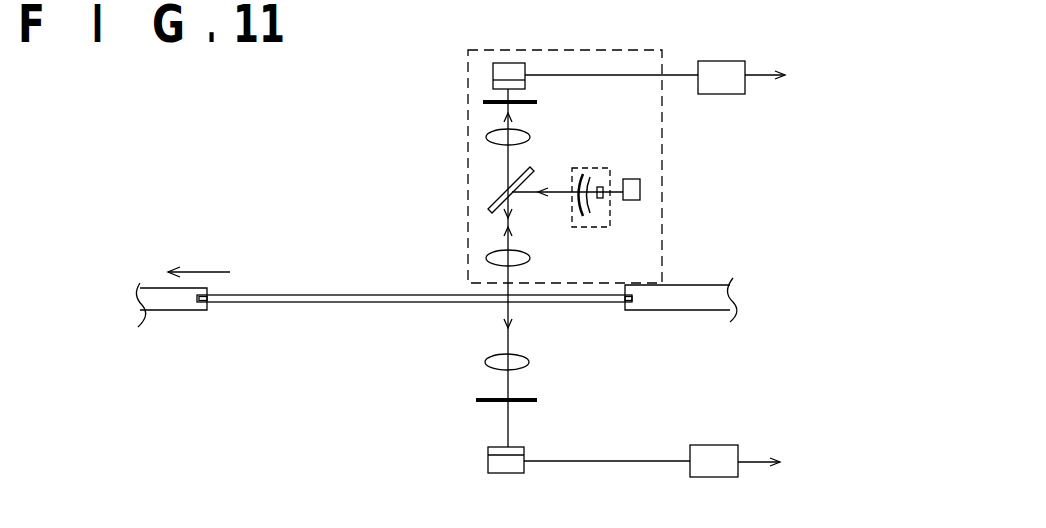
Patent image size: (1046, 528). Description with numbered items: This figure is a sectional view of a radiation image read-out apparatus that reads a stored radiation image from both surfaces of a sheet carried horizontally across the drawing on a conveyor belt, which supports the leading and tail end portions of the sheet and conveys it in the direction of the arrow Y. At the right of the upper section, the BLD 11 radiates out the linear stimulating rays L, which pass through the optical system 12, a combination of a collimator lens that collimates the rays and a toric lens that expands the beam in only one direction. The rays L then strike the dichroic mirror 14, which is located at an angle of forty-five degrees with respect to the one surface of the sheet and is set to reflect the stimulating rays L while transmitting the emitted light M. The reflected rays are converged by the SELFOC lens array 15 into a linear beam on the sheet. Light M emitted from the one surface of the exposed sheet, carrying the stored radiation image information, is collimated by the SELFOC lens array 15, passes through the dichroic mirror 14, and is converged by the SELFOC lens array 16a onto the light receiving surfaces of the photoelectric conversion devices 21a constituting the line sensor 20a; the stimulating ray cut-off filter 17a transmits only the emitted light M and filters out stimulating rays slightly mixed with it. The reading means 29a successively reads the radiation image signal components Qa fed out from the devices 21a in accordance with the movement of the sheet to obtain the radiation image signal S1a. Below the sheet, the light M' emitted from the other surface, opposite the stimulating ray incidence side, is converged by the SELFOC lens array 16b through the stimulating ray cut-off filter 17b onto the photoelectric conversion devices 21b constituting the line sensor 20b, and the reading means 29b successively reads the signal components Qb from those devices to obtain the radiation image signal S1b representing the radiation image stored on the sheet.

The BLD 11 is at (641, 190).
The optical system 12 is at (594, 168).
The dichroic mirror 14 is at (490, 212).
The SELFOC lens array 15 is at (488, 268).
The SELFOC lens array 16a is at (487, 137).
The SELFOC lens array 16b is at (529, 360).
The stimulating ray cut-off filter 17a is at (483, 101).
The stimulating ray cut-off filter 17b is at (537, 399).
The line sensor 20a is at (493, 68).
The line sensor 20b is at (500, 478).
The photoelectric conversion devices 21a is at (493, 82).
The photoelectric conversion devices 21b is at (488, 452).
The reading means 29a is at (716, 61).
The reading means 29b is at (712, 480).
The emitted light M is at (462, 163).
The emitted light M' is at (464, 337).
The linear stimulating rays L is at (563, 190).
The conveyance direction Y is at (199, 259).
The radiation image signal components Qa is at (610, 76).
The radiation image signal components Qb is at (588, 463).
The radiation image signal S1a is at (758, 75).
The radiation image signal S1b is at (757, 460).